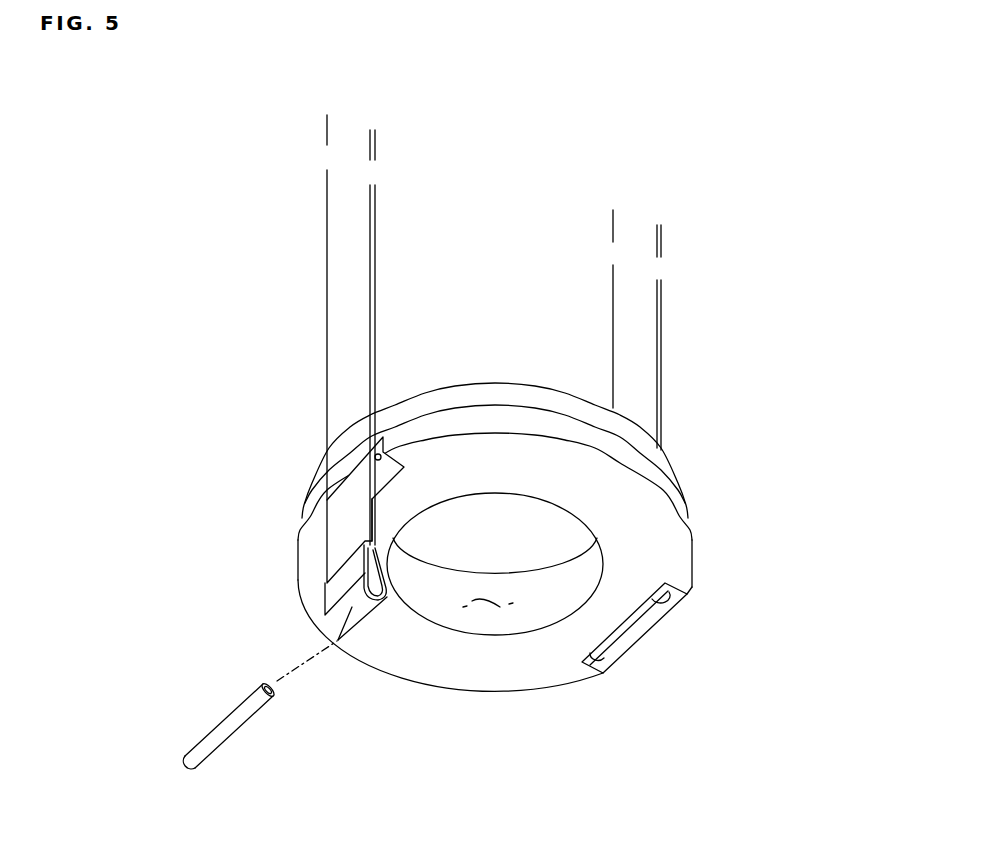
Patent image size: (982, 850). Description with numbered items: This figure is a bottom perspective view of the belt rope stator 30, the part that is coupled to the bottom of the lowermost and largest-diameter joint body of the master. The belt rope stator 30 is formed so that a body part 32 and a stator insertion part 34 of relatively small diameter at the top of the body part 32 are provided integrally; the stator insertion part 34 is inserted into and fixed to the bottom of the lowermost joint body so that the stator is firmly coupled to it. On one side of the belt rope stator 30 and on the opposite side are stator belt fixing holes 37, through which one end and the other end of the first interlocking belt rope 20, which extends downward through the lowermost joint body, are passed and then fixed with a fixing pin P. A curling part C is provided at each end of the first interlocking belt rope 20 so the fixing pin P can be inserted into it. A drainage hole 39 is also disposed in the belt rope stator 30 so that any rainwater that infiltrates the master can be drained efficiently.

The interlocking belt rope 20 is at (343, 238).
The belt rope stator 30 is at (524, 603).
The body part 32 is at (558, 628).
The stator insertion part 34 is at (628, 425).
The stator belt fixing hole 37 is at (343, 482).
The drainage hole 39 is at (489, 604).
The fixing pin P is at (227, 727).
The curling part C is at (338, 642).